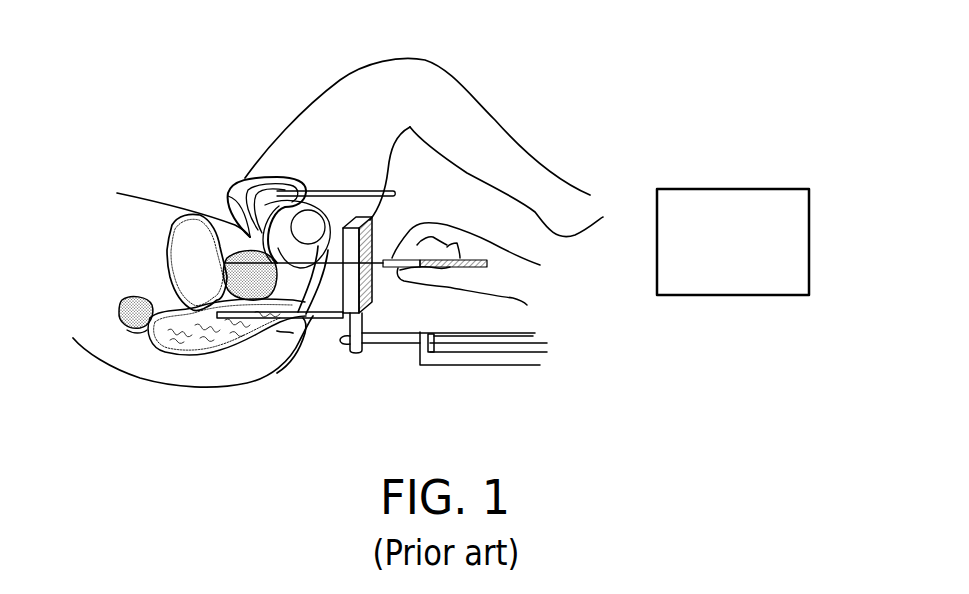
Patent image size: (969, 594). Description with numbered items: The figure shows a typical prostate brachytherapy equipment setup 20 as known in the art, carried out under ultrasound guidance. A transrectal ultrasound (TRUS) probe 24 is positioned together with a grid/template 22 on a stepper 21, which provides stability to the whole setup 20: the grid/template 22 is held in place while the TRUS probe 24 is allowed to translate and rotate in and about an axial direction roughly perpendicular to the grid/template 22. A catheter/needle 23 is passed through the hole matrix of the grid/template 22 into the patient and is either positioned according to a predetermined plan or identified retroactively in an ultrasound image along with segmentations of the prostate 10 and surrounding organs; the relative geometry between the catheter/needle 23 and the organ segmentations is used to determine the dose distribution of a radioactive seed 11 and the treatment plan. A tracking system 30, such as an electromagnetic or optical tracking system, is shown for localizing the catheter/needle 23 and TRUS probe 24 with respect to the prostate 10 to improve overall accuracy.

The prostate 10 is at (223, 283).
The radioactive seed 11 is at (248, 235).
The prostate brachytherapy equipment setup 20 is at (374, 405).
The stepper 21 is at (458, 367).
The grid/template 22 is at (373, 295).
The catheter/needle 23 is at (227, 262).
The transrectal ultrasound (TRUS) probe 24 is at (332, 320).
The tracking system 30 is at (720, 282).